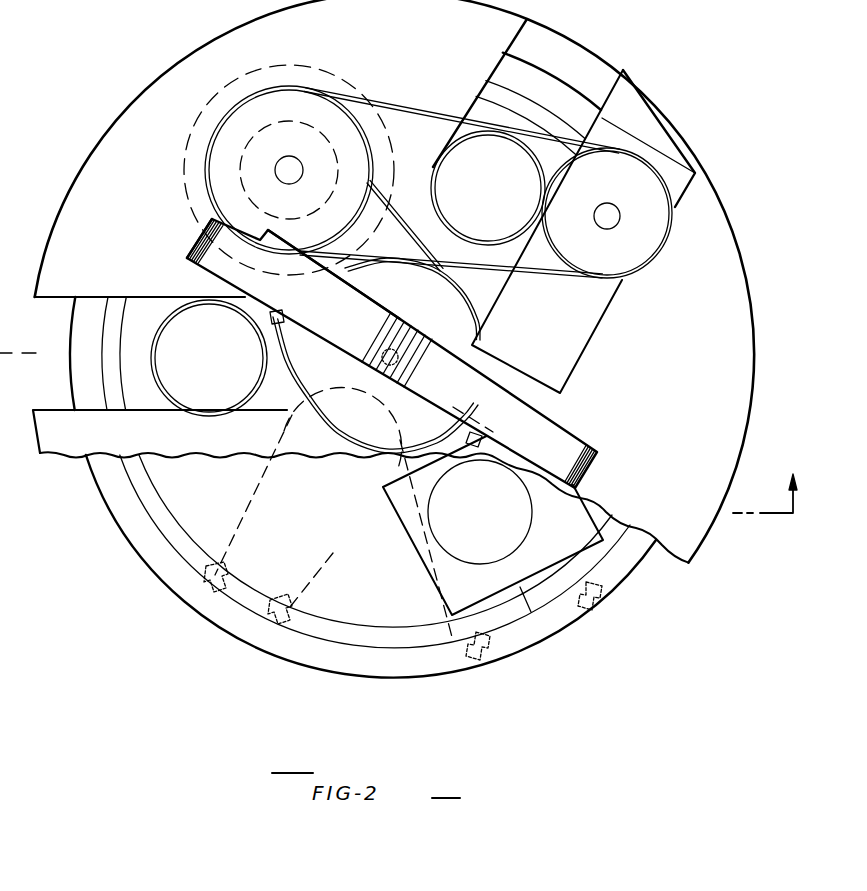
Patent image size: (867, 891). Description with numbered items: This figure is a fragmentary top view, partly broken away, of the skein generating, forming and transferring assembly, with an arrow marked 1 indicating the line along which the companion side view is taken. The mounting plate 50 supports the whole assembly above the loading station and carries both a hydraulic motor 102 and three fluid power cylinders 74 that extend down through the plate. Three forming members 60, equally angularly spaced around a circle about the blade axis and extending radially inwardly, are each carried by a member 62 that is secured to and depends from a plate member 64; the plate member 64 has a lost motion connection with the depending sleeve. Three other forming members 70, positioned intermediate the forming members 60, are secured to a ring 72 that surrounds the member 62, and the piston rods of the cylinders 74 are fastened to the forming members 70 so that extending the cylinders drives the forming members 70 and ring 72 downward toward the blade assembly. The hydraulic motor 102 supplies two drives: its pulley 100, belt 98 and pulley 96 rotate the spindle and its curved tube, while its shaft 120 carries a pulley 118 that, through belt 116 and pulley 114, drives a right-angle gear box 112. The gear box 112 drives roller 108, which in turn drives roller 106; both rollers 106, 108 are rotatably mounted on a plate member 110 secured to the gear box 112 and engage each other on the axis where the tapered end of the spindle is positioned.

The section line 1 is at (776, 499).
The mounting plate 50 is at (728, 222).
The forming members 60 is at (330, 542).
The member 62 is at (252, 598).
The plate member 64 is at (190, 520).
The forming members 70 is at (520, 588).
The ring 72 is at (303, 653).
The fluid power cylinders 74 is at (503, 195).
The pulley 96 is at (422, 423).
The belt 98 is at (290, 366).
The pulley 100 is at (206, 106).
The hydraulic motor 102 is at (255, 68).
The roller 106 is at (232, 268).
The roller 108 is at (549, 437).
The plate member 110 is at (383, 306).
The right-angle gear box 112 is at (583, 326).
The pulley 114 is at (625, 190).
The belt 116 is at (381, 100).
The pulley 118 is at (215, 146).
The shaft 120 is at (296, 144).